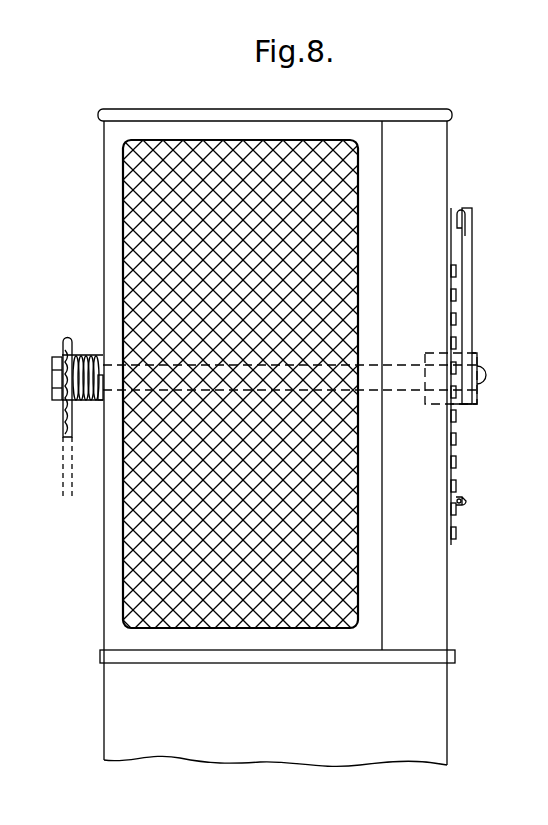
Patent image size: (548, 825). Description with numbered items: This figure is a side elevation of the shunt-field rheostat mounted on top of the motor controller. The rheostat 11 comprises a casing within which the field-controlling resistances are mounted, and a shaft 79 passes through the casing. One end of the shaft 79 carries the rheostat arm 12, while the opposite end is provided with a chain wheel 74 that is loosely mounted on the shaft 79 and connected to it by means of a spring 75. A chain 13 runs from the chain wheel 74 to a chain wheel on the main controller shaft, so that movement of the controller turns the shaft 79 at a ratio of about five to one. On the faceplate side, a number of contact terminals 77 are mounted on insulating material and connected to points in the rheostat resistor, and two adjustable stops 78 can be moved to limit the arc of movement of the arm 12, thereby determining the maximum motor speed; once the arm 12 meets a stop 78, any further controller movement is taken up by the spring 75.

The rheostat 11 is at (269, 437).
The rheostat arm 12 is at (473, 240).
The chain 13 is at (72, 472).
The chain wheel 74 is at (62, 407).
The spring 75 is at (80, 355).
The contact terminals 77 is at (457, 427).
The adjustable stops 78 is at (463, 507).
The shaft 79 is at (403, 392).